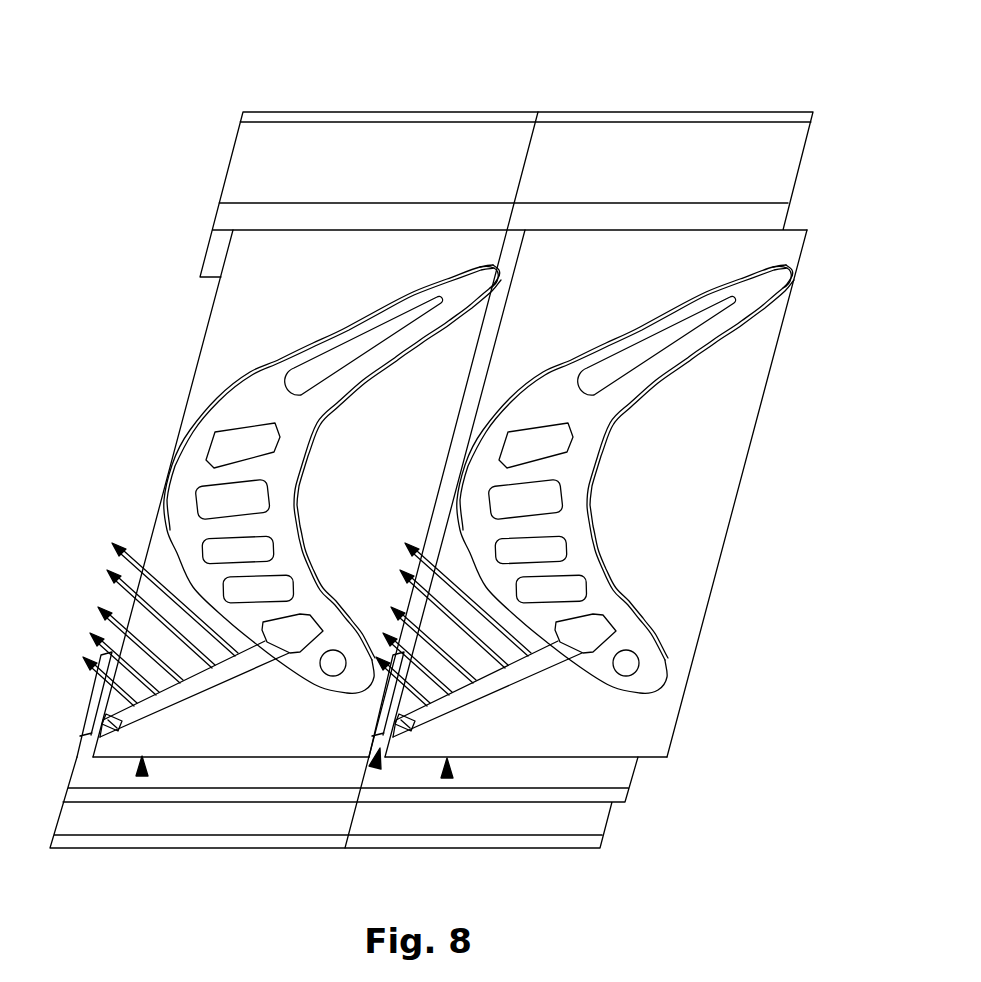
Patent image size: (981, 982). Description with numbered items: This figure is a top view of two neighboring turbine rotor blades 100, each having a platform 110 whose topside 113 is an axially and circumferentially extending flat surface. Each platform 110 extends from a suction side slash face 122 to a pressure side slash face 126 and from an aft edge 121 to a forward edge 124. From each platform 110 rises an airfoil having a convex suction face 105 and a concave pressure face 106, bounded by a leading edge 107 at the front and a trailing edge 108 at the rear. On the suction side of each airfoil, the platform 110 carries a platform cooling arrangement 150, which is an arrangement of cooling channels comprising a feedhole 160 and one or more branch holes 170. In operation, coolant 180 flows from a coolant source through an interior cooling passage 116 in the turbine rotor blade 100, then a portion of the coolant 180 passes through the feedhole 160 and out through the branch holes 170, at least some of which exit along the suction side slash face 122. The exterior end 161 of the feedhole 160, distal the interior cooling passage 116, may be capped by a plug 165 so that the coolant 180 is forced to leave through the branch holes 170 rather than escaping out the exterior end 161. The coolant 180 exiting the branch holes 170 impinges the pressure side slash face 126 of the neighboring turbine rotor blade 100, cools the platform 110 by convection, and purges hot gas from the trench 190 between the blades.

The turbine rotor blade 100 is at (442, 459).
The convex suction face 105 is at (226, 388).
The concave pressure face 106 is at (298, 466).
The leading edge 107 is at (351, 690).
The trailing edge 108 is at (500, 265).
The platform 110 is at (142, 776).
The topside 113 is at (389, 405).
The interior cooling passage 116 is at (304, 628).
The aft edge 121 is at (298, 230).
The suction side slash face 122 is at (203, 345).
The forward edge 124 is at (238, 758).
The pressure side slash face 126 is at (494, 300).
The platform cooling arrangement 150 is at (196, 710).
The feedhole 160 is at (218, 686).
The exterior end 161 is at (83, 734).
The plug 165 is at (122, 722).
The branch hole 170 is at (104, 630).
The coolant 180 is at (108, 575).
The trench 190 is at (375, 768).